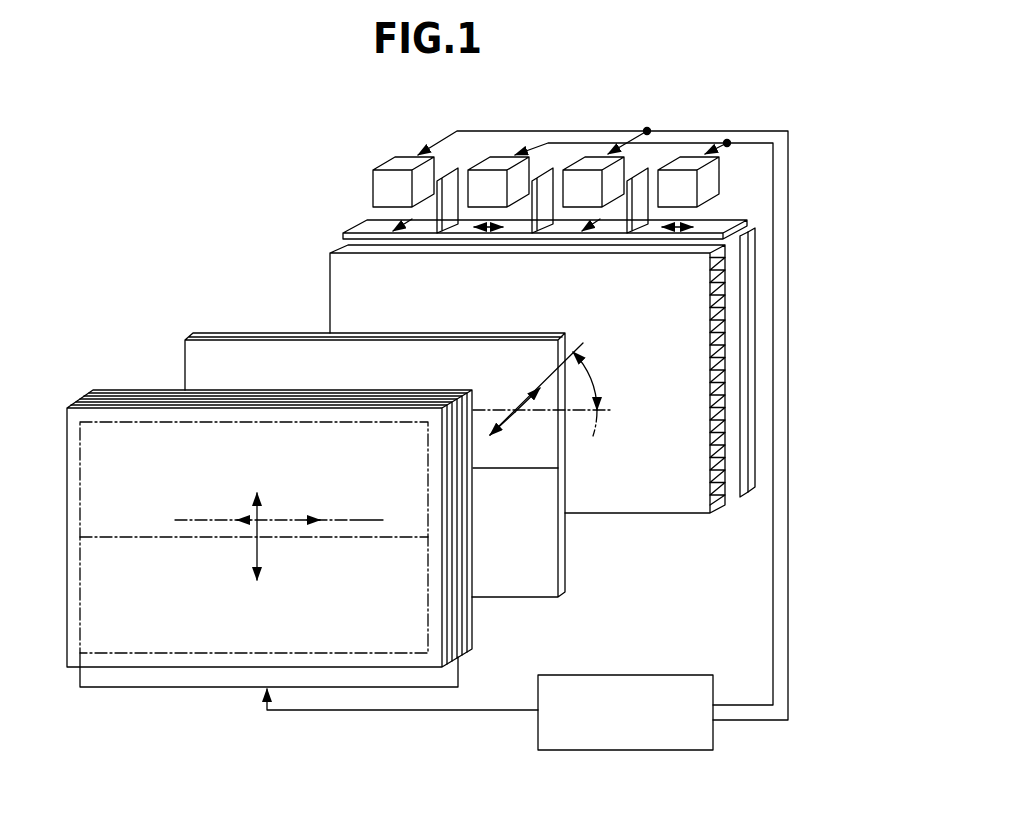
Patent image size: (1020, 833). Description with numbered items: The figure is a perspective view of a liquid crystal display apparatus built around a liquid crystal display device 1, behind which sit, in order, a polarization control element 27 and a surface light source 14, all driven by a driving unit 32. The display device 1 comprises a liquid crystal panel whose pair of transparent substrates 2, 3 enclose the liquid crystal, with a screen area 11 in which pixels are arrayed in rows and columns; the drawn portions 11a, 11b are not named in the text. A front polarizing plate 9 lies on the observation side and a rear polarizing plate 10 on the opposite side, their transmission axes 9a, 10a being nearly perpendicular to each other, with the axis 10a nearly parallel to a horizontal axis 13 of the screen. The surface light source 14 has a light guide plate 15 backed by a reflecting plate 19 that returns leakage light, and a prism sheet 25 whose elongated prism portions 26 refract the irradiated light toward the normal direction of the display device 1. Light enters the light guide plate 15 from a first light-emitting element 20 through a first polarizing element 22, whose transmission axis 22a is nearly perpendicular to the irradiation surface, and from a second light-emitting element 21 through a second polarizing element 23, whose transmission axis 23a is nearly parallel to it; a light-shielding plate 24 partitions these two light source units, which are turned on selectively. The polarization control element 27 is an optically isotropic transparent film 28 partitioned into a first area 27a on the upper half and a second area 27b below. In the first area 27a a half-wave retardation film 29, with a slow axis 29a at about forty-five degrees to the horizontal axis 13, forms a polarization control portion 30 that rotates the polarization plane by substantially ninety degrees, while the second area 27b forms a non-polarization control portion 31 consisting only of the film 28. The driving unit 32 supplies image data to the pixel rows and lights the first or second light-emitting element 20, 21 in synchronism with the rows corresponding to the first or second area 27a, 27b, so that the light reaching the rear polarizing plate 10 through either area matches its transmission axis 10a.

The liquid crystal display device 1 is at (117, 378).
The transparent substrate (front substrate) 2 is at (453, 612).
The transparent substrate (rear substrate) 3 is at (463, 657).
The front polarizing plate 9 is at (355, 415).
The transmission axis of front polarizing plate 9a is at (257, 548).
The rear polarizing plate 10 is at (422, 390).
The transmission axis of rear polarizing plate 10a is at (280, 515).
The screen area 11 is at (143, 654).
The upper substrate 11a is at (273, 435).
The lower substrate 11b is at (222, 636).
The horizontal axis of the screen 13 is at (367, 515).
The surface light source 14 is at (360, 165).
The light guide plate 15 is at (735, 493).
The reflecting plate 19 is at (762, 473).
The first light-emitting element 20 is at (404, 170).
The second light-emitting element 21 is at (499, 165).
The first polarizing element 22 is at (367, 229).
The transmission axis of first polarizing element 22a is at (408, 237).
The second polarizing element 23 is at (718, 226).
The transmission axis of second polarizing element 23a is at (488, 232).
The light-shielding plate 24 is at (454, 170).
The prism sheet 25 is at (652, 503).
The prism portions 26 is at (713, 400).
The polarization control element 27 is at (222, 322).
The first area 27a is at (325, 357).
The second area 27b is at (520, 575).
The transparent film 28 is at (567, 487).
The λ/2 retardation film 29 is at (248, 340).
The slow axis 29a is at (542, 405).
The polarization control portion 30 is at (512, 358).
The non-polarization control portion 31 is at (536, 552).
The driving unit 32 is at (665, 676).